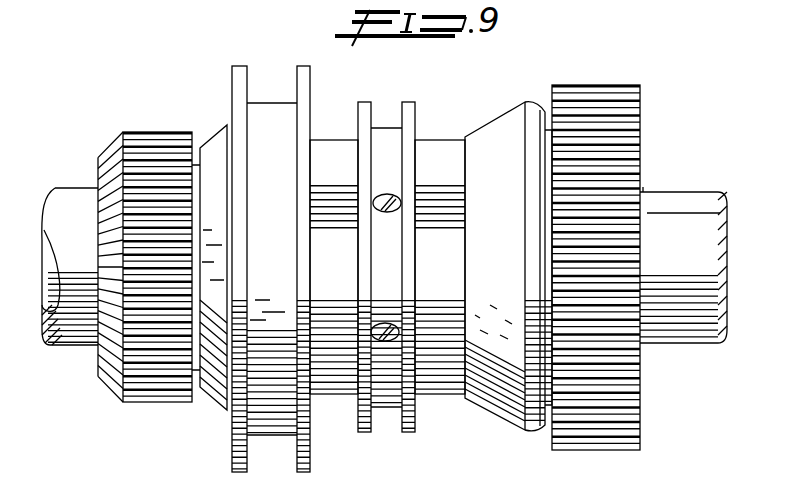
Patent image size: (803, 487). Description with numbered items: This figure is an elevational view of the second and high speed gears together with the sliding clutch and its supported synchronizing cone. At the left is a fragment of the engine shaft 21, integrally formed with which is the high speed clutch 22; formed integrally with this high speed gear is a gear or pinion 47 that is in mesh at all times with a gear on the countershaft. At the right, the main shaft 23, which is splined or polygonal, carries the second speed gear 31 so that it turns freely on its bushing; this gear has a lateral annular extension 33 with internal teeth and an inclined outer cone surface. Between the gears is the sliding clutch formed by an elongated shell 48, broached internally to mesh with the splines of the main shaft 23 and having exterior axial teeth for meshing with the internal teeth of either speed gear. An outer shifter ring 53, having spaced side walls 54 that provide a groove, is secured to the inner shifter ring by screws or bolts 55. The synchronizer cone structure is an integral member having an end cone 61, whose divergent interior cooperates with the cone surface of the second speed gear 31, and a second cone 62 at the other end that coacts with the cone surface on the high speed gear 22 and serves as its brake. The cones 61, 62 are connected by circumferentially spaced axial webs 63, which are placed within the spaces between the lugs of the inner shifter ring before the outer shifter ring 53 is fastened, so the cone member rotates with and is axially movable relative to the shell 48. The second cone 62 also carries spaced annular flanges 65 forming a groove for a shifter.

The engine shaft 21 is at (68, 202).
The high speed clutch 22 is at (212, 410).
The main shaft 23 is at (678, 220).
The second speed gear 31 is at (613, 86).
The lateral annular extension 33 is at (545, 402).
The gear or pinion 47 is at (143, 140).
The elongated shell 48 is at (448, 324).
The outer shifter ring 53 is at (385, 138).
The side walls 54 is at (413, 110).
The screws or bolts 55 is at (384, 196).
The end cone 61 is at (512, 117).
The second cone 62 is at (228, 122).
The axial webs 63 is at (335, 152).
The annular flanges 65 is at (305, 66).